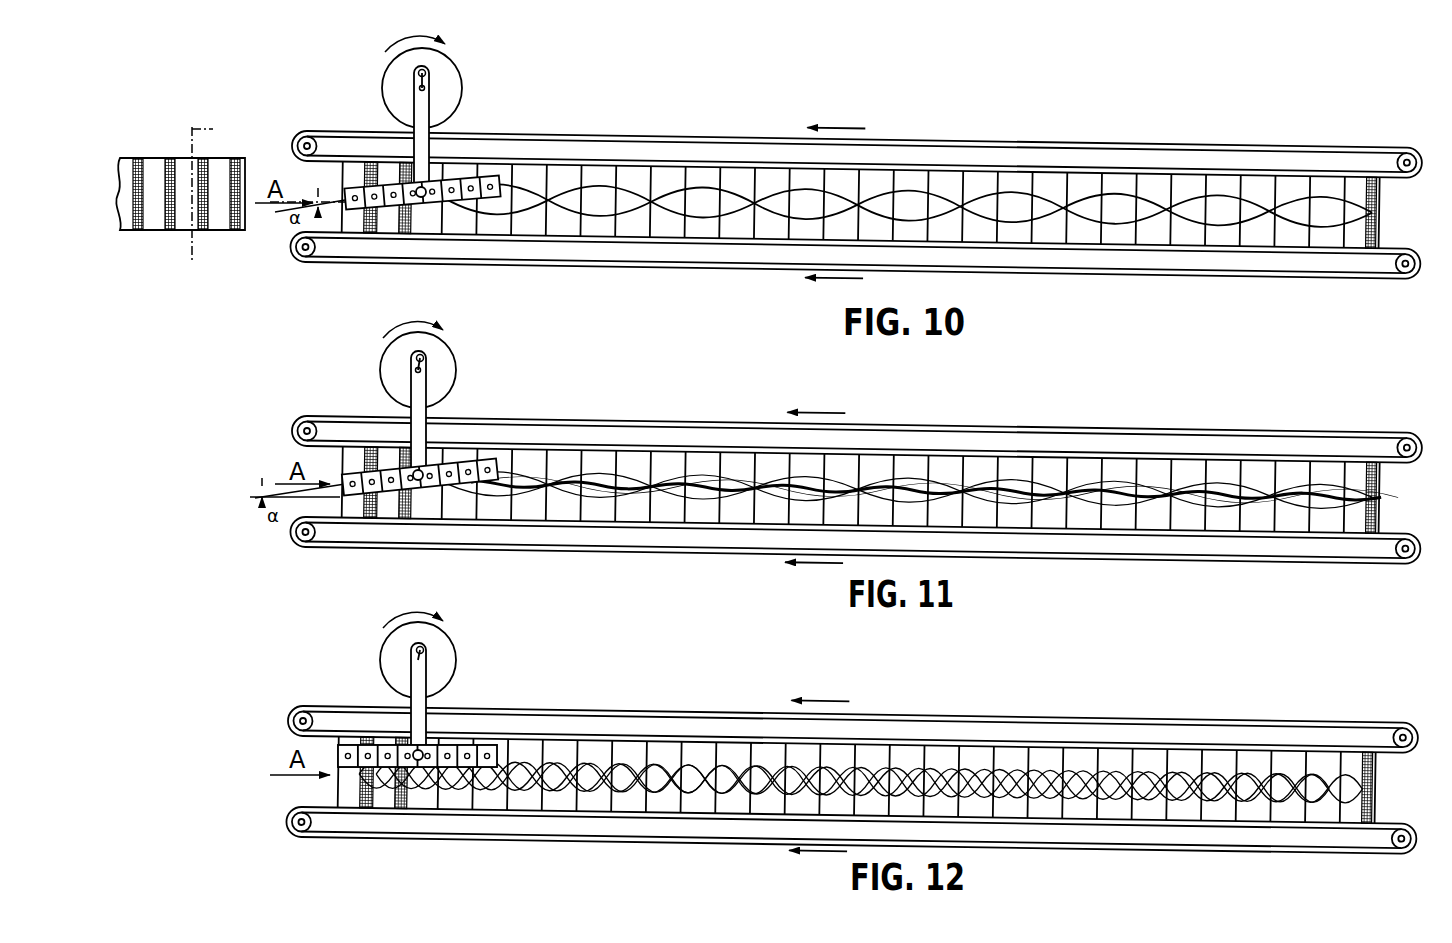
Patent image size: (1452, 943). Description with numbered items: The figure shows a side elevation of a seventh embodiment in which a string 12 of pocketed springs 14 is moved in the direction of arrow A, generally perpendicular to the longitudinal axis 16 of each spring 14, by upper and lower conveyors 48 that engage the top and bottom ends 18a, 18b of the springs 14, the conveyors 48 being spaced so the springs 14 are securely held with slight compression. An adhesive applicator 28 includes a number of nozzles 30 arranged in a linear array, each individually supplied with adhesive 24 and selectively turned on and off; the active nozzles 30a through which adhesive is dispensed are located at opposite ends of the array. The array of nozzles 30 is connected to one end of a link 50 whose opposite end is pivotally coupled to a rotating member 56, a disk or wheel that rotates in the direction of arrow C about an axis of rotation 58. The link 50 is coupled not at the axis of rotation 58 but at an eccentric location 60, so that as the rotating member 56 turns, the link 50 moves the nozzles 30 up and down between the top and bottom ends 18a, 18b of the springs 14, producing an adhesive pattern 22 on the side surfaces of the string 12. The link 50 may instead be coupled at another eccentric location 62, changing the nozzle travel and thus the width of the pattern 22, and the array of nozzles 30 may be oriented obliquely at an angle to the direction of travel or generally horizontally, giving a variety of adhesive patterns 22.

In FIG. 10, the string of pocketed springs 12 is at (775, 198).
In FIG. 11, the string of pocketed springs 12 is at (1384, 502).
In FIG. 12, the string of pocketed springs 12 is at (1380, 787).
In FIG. 10, the pocketed spring 14 is at (1152, 188).
In FIG. 11, the pocketed spring 14 is at (1152, 522).
In FIG. 12, the pocketed spring 14 is at (1107, 813).
In FIG. 10, the longitudinal axis 16 is at (213, 128).
In FIG. 10, the top end 18a is at (171, 158).
In FIG. 10, the bottom end 18b is at (225, 230).
In FIG. 10, the adhesive pattern 22 is at (986, 202).
In FIG. 11, the adhesive pattern 22 is at (903, 480).
In FIG. 12, the adhesive pattern 22 is at (907, 763).
In FIG. 10, the adhesive 24 is at (781, 216).
In FIG. 11, the adhesive 24 is at (1110, 478).
In FIG. 12, the adhesive 24 is at (1108, 763).
In FIG. 10, the adhesive applicator 28 is at (457, 106).
In FIG. 11, the adhesive applicator 28 is at (448, 391).
In FIG. 12, the adhesive applicator 28 is at (443, 673).
In FIG. 10, the nozzle 30 is at (479, 201).
In FIG. 11, the nozzle 30 is at (374, 489).
In FIG. 12, the nozzle 30 is at (500, 747).
In FIG. 10, the active nozzle 30a is at (500, 172).
In FIG. 10, the conveyor 48 is at (306, 262).
In FIG. 11, the conveyor 48 is at (292, 428).
In FIG. 12, the conveyor 48 is at (292, 722).
In FIG. 10, the link 50 is at (429, 147).
In FIG. 11, the link 50 is at (426, 440).
In FIG. 12, the link 50 is at (426, 727).
In FIG. 10, the rotating member 56 is at (461, 90).
In FIG. 11, the rotating member 56 is at (457, 362).
In FIG. 12, the rotating member 56 is at (457, 655).
In FIG. 10, the axis of rotation 58 is at (420, 92).
In FIG. 11, the axis of rotation 58 is at (420, 374).
In FIG. 12, the axis of rotation 58 is at (417, 664).
In FIG. 10, the eccentric location 60 is at (418, 87).
In FIG. 11, the eccentric location 60 is at (414, 368).
In FIG. 10, the eccentric location 62 is at (426, 74).
In FIG. 11, the eccentric location 62 is at (424, 358).
In FIG. 12, the eccentric location 62 is at (424, 649).